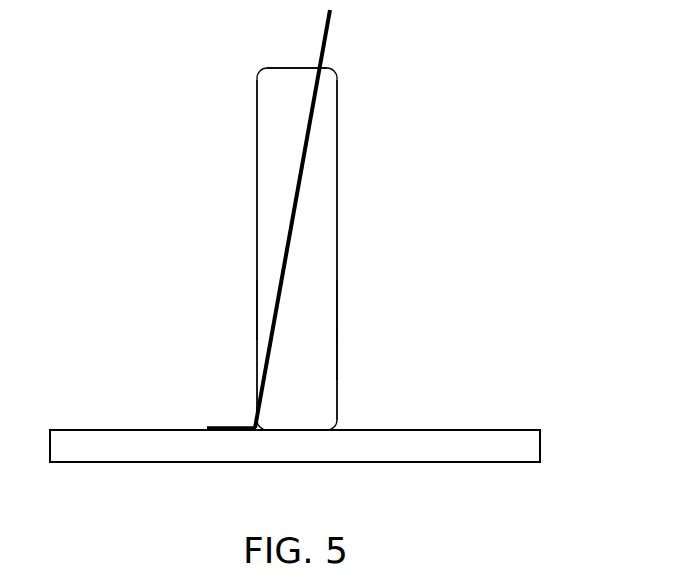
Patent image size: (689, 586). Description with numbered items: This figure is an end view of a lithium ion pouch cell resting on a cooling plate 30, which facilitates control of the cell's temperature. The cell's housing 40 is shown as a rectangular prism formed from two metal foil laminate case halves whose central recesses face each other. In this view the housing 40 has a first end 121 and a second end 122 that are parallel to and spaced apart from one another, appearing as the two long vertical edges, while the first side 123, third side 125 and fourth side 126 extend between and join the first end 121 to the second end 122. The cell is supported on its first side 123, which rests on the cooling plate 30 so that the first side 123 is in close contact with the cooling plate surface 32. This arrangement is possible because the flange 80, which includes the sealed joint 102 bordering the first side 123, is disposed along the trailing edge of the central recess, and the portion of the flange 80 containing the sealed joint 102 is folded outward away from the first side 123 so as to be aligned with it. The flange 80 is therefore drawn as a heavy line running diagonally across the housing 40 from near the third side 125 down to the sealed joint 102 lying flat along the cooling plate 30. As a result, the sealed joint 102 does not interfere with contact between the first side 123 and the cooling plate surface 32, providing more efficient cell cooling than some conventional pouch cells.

The cooling plate 30 is at (478, 452).
The cooling plate surface 32 is at (415, 429).
The housing 40 is at (338, 183).
The flange 80 is at (334, 42).
The sealed joint 102 is at (252, 424).
The first end 121 is at (337, 307).
The second end 122 is at (257, 307).
The first side 123 is at (318, 432).
The third side 125 is at (284, 66).
The fourth side 126 is at (324, 356).